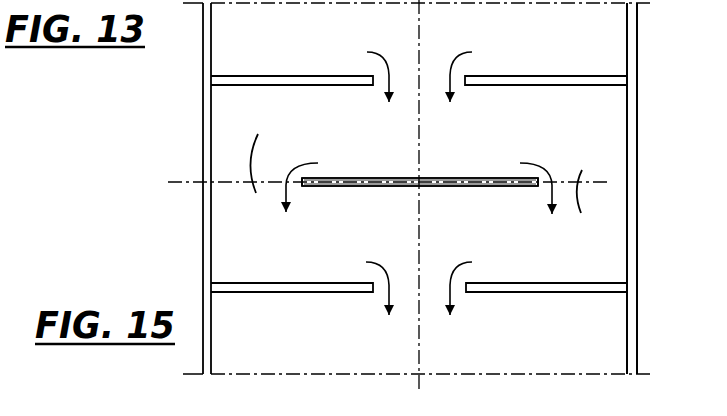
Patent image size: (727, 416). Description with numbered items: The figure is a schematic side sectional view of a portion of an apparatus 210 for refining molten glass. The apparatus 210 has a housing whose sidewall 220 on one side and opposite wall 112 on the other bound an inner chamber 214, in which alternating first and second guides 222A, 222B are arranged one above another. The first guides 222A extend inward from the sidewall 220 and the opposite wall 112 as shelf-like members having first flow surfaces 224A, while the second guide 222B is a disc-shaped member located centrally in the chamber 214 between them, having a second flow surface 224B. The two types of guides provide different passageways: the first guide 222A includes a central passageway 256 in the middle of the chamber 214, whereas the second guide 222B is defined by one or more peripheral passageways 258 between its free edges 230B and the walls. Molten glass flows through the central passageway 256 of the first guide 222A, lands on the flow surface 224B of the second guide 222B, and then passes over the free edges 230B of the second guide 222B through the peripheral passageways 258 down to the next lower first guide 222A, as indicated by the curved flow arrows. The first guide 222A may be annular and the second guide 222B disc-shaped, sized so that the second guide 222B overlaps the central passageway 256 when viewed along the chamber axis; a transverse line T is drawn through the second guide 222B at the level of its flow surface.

The apparatus for refining molten glass 210 is at (382, 188).
The sidewall 220 is at (203, 108).
The inner chamber 214 is at (590, 124).
The housing wall 112 is at (637, 209).
The first guide 222A is at (287, 75).
The first flow surface 224A is at (506, 69).
The second flow surface 224B is at (378, 165).
The second guide 222B is at (456, 175).
The free edges 230B is at (298, 188).
The central passageway 256 is at (405, 83).
The peripheral passageways 258 is at (428, 174).
The transverse axis T is at (183, 181).